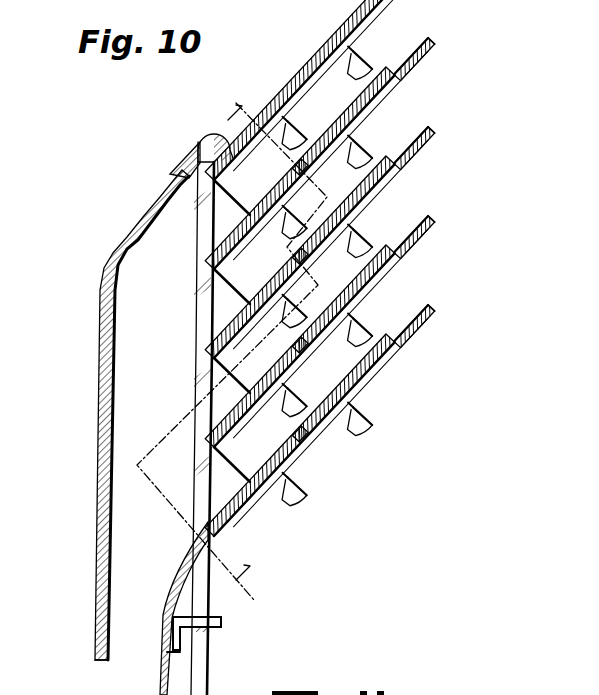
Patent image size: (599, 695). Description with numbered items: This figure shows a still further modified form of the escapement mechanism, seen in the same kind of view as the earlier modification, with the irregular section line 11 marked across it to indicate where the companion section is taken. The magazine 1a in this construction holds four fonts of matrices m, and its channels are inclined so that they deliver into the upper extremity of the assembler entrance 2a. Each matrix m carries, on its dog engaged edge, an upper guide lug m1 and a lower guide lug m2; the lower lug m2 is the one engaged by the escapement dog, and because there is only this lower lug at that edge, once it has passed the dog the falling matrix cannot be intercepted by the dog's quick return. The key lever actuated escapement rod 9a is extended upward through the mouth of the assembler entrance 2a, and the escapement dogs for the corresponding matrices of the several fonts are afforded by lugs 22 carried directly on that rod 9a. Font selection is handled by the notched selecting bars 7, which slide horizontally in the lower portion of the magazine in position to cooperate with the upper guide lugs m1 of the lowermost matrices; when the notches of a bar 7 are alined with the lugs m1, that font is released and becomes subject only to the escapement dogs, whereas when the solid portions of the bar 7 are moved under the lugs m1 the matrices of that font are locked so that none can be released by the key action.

The magazine 1a is at (332, 46).
The section line x11 x11 11 is at (232, 342).
The lugs 22 is at (200, 283).
The assembler entrance 2a is at (110, 515).
The notched selecting bar 7 is at (300, 403).
The escapement rod 9a is at (203, 653).
The matrix m is at (318, 367).
The upper guide lug m1 is at (380, 353).
The lower guide lug m2 is at (216, 450).